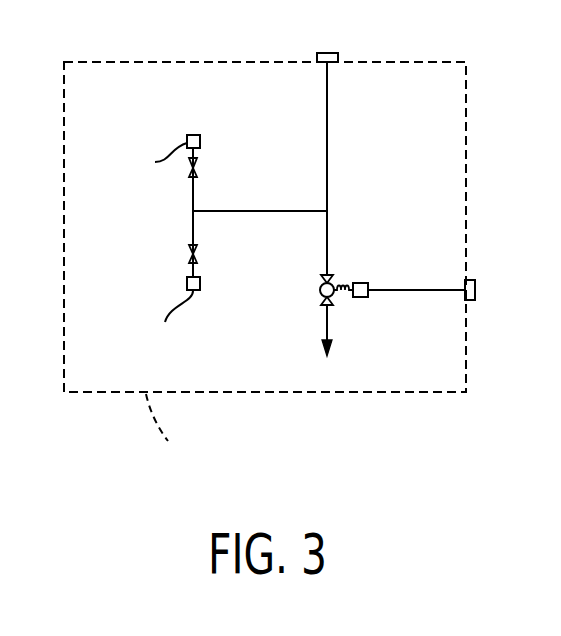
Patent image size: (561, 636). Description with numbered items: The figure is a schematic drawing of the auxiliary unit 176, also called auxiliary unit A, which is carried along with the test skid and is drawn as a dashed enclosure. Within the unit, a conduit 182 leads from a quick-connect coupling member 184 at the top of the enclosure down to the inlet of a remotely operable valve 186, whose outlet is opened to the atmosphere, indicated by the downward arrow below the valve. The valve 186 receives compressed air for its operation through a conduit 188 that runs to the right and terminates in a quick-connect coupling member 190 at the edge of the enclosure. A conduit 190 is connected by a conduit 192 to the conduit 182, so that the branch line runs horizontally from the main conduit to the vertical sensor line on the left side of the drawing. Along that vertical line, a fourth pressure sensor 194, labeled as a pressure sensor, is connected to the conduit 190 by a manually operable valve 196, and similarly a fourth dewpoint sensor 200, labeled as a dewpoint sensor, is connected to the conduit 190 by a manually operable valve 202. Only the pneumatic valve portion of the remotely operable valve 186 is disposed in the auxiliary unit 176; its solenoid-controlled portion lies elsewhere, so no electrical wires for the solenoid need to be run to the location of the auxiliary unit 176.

The auxiliary unit 176 is at (424, 60).
The conduit 182 is at (329, 142).
The quick-connect coupling member 184 is at (323, 52).
The remotely operable valve 186 is at (320, 302).
The conduit 188 is at (425, 290).
The quick-connect coupling member / conduit 190 is at (191, 224).
The conduit 192 is at (273, 213).
The fourth pressure sensor 194 is at (190, 133).
The manually operable valve 196 is at (198, 172).
The fourth dewpoint sensor 200 is at (188, 283).
The manually operable valve 202 is at (198, 258).